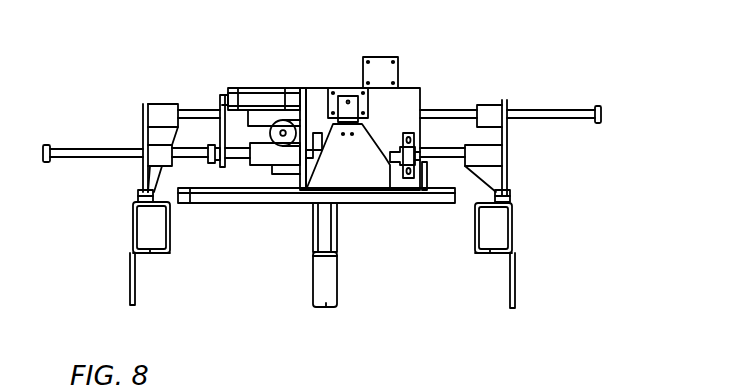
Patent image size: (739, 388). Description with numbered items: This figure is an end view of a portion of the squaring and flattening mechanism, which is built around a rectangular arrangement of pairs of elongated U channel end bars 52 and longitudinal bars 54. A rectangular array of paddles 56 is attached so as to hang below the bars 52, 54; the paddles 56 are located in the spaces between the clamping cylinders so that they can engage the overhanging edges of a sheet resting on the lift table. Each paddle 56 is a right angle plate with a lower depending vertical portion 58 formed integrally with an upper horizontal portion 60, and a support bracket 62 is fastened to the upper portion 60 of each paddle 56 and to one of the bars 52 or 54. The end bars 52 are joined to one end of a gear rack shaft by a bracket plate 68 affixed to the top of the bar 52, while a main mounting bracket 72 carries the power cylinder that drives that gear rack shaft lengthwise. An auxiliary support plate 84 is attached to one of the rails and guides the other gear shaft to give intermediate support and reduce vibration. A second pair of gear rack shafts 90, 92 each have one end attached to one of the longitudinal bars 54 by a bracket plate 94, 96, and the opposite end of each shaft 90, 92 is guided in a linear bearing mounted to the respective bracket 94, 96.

The U channel end bar 52 is at (262, 203).
The longitudinal bar 54 is at (139, 196).
The paddle 56 is at (173, 245).
The lower depending vertical portion 58 is at (130, 287).
The upper horizontal portion 60 is at (148, 250).
The support bracket 62 is at (163, 215).
The bracket plate 68 is at (366, 178).
The main mounting bracket 72 is at (402, 88).
The auxiliary support plate 84 is at (363, 57).
The gear rack shaft 90 is at (71, 149).
The gear rack shaft 92 is at (557, 111).
The bracket plate 94 is at (143, 115).
The bracket plate 96 is at (504, 132).